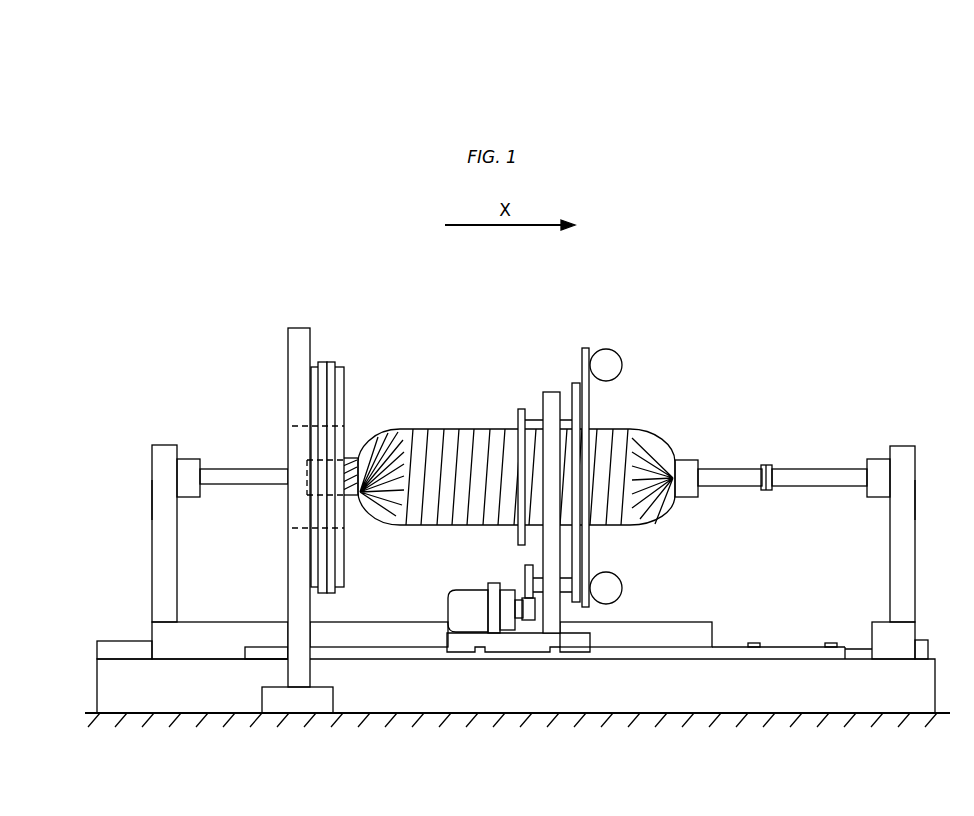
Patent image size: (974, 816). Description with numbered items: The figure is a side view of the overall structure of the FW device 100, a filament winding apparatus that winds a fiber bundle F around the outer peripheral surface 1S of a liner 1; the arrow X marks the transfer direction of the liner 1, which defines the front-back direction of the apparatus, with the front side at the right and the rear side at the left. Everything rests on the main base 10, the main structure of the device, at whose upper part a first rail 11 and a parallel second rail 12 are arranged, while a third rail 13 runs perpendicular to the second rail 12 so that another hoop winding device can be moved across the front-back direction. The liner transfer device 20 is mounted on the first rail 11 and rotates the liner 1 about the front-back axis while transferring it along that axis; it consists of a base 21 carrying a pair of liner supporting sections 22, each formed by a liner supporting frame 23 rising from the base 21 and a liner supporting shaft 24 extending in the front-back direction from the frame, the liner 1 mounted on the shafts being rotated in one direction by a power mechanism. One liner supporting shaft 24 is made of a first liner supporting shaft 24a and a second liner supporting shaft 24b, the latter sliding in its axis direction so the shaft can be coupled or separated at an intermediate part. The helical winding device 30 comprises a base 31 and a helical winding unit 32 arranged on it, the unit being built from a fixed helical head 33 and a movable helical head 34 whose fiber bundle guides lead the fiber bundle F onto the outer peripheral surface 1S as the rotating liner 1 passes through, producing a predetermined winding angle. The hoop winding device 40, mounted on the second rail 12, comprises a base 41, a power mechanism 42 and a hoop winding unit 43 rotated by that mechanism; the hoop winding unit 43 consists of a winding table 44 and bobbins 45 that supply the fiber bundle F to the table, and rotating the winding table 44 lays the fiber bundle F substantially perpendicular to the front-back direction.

The FW device 100 is at (168, 268).
The liner 1 is at (520, 430).
The outer peripheral surface 1S is at (450, 437).
The fiber bundle F is at (404, 429).
The main base 10 is at (399, 714).
The first rail 11 is at (116, 641).
The second rail 12 is at (389, 634).
The third rail 13 is at (837, 643).
The liner transfer device 20 is at (130, 448).
The base 21 is at (228, 622).
The liner supporting section 22 is at (160, 440).
The liner supporting frame 23 is at (152, 500).
The liner supporting shaft 24 is at (237, 469).
The first liner supporting shaft 24a is at (740, 469).
The second liner supporting shaft 24b is at (800, 469).
The helical winding device 30 is at (306, 302).
The base 31 is at (288, 332).
The helical winding unit 32 is at (338, 334).
The fixed helical head 33 is at (333, 362).
The movable helical head 34 is at (321, 362).
The hoop winding device 40 is at (550, 306).
The base 41 is at (546, 392).
The power mechanism 42 is at (498, 572).
The hoop winding unit 43 is at (590, 333).
The winding table 44 is at (575, 383).
The bobbin 45 is at (622, 361).